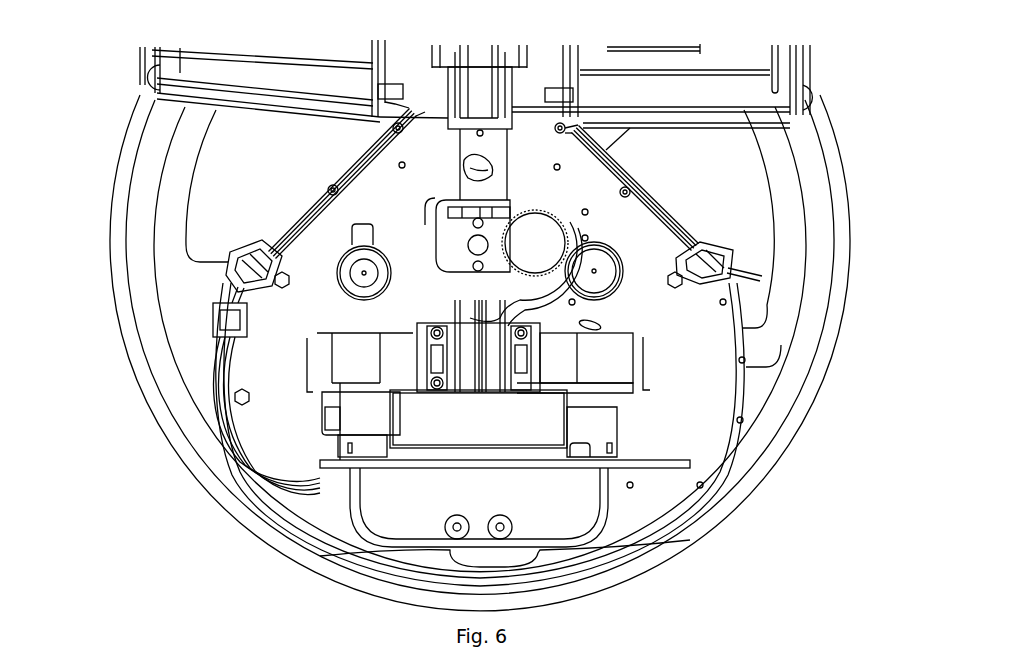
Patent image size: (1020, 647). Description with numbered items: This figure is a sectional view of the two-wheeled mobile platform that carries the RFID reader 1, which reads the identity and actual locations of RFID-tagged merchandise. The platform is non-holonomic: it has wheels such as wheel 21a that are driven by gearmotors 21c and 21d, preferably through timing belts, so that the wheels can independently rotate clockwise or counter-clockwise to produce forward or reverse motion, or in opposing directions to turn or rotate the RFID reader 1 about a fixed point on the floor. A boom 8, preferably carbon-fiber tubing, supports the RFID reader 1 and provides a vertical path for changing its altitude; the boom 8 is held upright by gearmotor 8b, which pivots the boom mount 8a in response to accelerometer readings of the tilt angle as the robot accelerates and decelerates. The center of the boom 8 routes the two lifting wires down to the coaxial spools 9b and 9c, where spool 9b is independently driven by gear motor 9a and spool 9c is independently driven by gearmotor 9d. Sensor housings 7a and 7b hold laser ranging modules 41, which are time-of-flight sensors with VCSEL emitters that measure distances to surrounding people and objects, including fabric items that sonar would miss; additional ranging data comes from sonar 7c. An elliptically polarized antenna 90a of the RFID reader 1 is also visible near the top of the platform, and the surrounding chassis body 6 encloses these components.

The RFID reader 1 is at (142, 44).
The chassis plate 6 is at (750, 387).
The sensor housing 7a is at (230, 263).
The sensor housing 7b is at (732, 263).
The sonar 7c is at (213, 323).
The boom 8 is at (468, 47).
The boom mount 8a is at (441, 222).
The gearmotor 8b is at (549, 233).
The gear motor 9a is at (343, 357).
The spool 9b is at (467, 360).
The spool 9c is at (493, 363).
The gearmotor 9d is at (565, 367).
The wheel 21a is at (843, 196).
The gearmotor 21c is at (602, 249).
The gearmotor 21d is at (345, 255).
The laser ranging module 41 is at (720, 258).
The dual elliptical antenna 90a is at (777, 83).